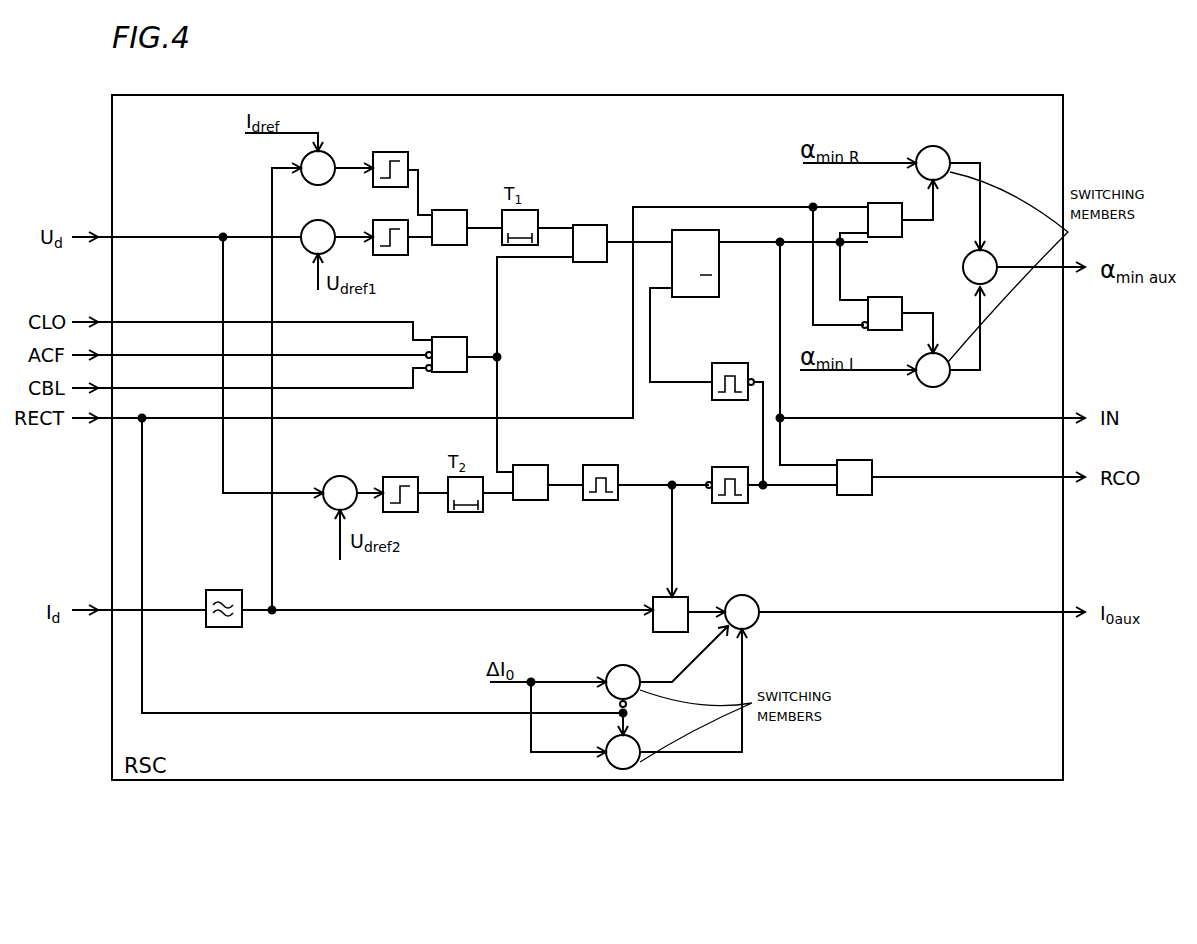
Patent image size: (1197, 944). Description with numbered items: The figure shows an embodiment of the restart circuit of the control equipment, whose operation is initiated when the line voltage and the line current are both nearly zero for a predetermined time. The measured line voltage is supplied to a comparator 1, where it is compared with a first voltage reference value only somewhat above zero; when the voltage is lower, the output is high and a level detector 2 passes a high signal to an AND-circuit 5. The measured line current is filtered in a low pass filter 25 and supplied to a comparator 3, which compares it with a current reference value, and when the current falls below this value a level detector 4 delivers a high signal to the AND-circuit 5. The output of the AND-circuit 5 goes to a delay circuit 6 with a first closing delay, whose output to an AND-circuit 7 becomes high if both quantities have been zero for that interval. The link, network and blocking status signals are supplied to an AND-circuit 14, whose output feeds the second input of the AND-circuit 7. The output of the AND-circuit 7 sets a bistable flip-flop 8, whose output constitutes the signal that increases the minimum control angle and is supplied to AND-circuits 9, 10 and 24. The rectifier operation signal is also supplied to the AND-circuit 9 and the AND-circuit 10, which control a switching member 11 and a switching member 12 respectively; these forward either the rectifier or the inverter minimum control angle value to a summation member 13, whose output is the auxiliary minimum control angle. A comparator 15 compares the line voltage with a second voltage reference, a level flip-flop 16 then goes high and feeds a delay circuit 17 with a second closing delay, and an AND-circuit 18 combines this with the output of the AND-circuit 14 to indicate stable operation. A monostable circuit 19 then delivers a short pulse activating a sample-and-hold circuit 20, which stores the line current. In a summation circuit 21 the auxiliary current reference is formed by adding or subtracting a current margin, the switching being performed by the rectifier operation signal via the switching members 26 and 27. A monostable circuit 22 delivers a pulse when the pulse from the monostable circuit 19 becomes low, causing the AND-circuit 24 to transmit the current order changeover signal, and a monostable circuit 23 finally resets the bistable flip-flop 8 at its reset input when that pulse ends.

The comparator 1 is at (314, 221).
The level detector 2 is at (386, 220).
The comparator 3 is at (332, 152).
The level detector 4 is at (395, 150).
The AND-circuit 5 is at (450, 209).
The delay circuit 6 is at (530, 210).
The AND-circuit 7 is at (592, 225).
The bistable flip-flop 8 is at (722, 236).
The AND-circuit 9 is at (880, 202).
The AND-circuit 10 is at (886, 296).
The switching member 11 is at (936, 146).
The switching member 12 is at (944, 355).
The summation member 13 is at (992, 254).
The AND-circuit 14 is at (458, 337).
The comparator 15 is at (342, 476).
The level flip-flop 16 is at (404, 476).
The delay circuit 17 is at (478, 476).
The AND-circuit 18 is at (532, 464).
The monostable circuit 19 is at (602, 464).
The sample-and-hold circuit 20 is at (652, 598).
The summation circuit 21 is at (752, 598).
The monostable circuit 22 is at (730, 466).
The monostable circuit 23 is at (730, 362).
The AND-circuit 24 is at (850, 459).
The low pass filter 25 is at (218, 589).
The switching member 26 is at (611, 667).
The switching member 27 is at (636, 744).